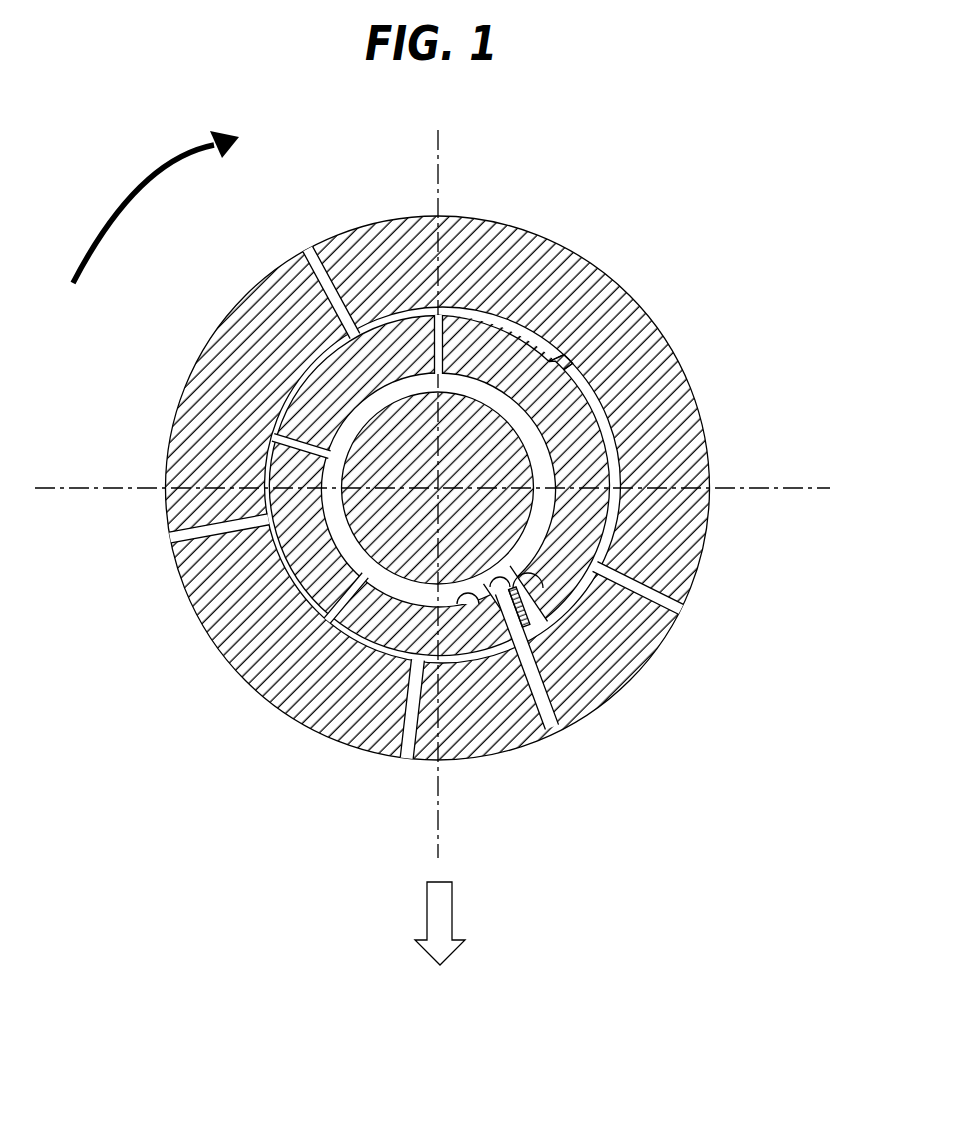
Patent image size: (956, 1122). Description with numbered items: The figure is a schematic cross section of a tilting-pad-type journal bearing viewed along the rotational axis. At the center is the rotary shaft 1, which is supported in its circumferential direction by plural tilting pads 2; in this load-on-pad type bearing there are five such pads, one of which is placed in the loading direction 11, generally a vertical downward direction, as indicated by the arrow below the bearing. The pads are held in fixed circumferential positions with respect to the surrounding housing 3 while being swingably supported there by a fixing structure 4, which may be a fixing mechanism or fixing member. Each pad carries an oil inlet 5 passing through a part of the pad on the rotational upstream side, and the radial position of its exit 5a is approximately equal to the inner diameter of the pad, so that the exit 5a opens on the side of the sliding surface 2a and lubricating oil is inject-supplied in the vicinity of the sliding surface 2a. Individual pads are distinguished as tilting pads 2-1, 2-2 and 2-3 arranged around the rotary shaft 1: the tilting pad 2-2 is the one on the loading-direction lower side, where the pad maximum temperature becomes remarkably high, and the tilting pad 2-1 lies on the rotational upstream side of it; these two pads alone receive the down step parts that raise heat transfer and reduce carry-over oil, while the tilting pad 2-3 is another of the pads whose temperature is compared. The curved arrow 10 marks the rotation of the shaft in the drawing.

The rotary shaft 1 is at (532, 460).
The tilting pad 2 is at (490, 330).
The tilting pad 2-1 is at (562, 580).
The tilting pad 2-2 is at (348, 680).
The tilting pad 2-3 is at (303, 562).
The sliding surface 2a is at (468, 606).
The housing 3 is at (370, 224).
The fixing structure 4 is at (604, 317).
The oil inlet 5 is at (561, 721).
The exit 5a is at (548, 620).
The rotation direction arrow 10 is at (138, 185).
The loading direction 11 is at (452, 912).